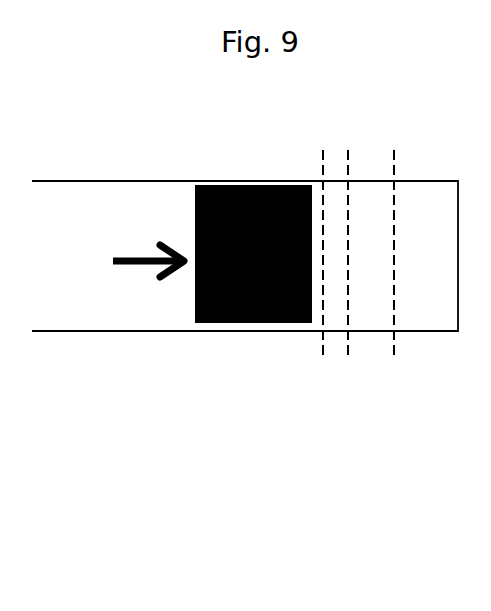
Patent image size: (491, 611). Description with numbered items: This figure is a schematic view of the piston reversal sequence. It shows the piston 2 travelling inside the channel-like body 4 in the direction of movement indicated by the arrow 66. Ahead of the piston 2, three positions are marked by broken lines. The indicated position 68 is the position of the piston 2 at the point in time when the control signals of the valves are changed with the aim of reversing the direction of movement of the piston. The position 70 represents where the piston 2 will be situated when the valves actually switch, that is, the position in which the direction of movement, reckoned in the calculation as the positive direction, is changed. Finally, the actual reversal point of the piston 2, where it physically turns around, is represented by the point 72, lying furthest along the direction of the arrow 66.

The piston 2 is at (189, 174).
The channel 4 is at (67, 355).
The arrow 66 is at (120, 234).
The indicated position 68 is at (318, 373).
The position 70 is at (347, 374).
The actual reversal point 72 is at (401, 379).